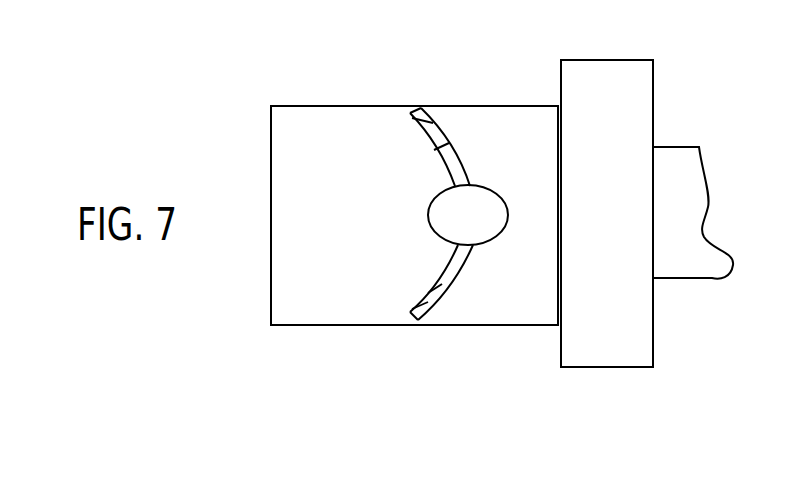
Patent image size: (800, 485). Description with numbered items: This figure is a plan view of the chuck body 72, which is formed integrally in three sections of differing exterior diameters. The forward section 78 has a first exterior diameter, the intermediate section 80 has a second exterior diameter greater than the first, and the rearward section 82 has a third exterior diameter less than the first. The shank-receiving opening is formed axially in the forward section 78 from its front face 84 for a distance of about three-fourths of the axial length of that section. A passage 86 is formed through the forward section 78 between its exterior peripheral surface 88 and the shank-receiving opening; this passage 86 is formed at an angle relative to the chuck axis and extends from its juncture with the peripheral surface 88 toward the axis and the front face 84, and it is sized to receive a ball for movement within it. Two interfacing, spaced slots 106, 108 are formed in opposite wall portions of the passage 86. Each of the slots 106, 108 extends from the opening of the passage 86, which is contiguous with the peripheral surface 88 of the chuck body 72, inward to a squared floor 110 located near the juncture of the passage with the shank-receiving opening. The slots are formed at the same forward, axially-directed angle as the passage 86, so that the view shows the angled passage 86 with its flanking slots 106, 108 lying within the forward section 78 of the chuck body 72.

The chuck body 72 is at (733, 125).
The forward section 78 is at (305, 119).
The intermediate section 80 is at (633, 75).
The rearward section 82 is at (682, 268).
The front face 84 is at (271, 142).
The passage 86 is at (487, 238).
The exterior peripheral surface 88 is at (302, 327).
The slot 106 is at (438, 147).
The slot 108 is at (432, 288).
The squared floor 110 is at (425, 122).